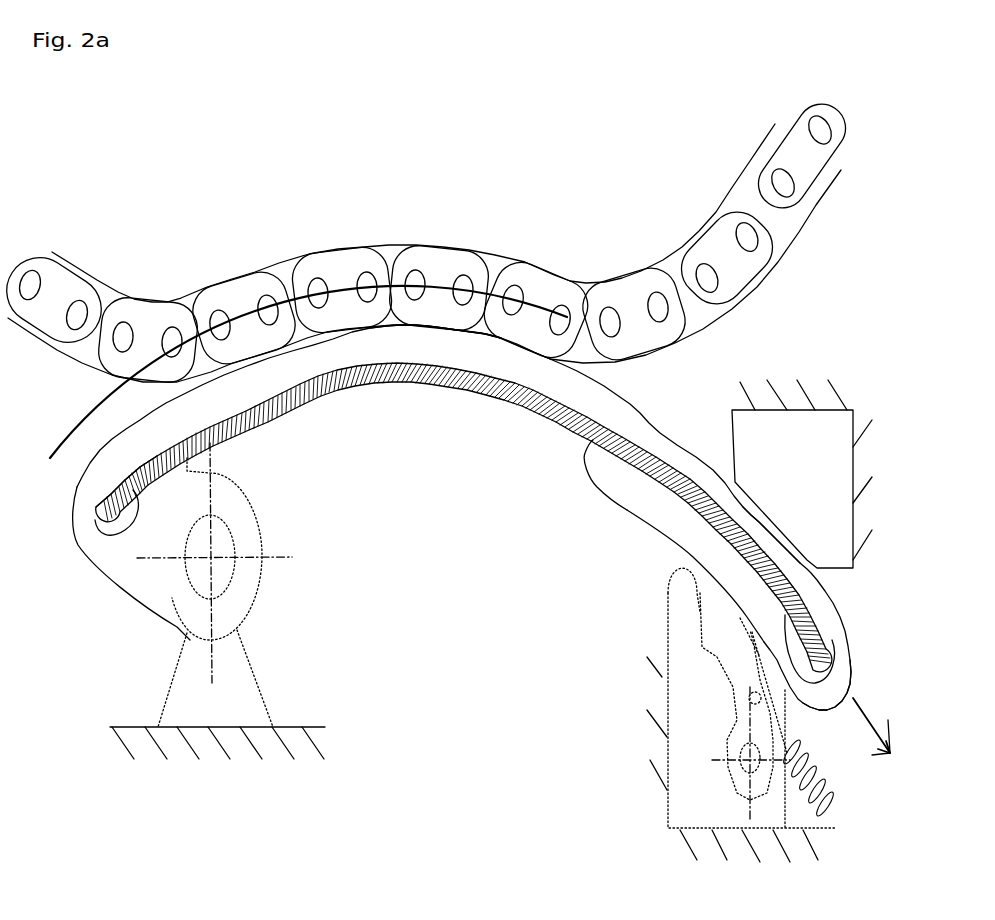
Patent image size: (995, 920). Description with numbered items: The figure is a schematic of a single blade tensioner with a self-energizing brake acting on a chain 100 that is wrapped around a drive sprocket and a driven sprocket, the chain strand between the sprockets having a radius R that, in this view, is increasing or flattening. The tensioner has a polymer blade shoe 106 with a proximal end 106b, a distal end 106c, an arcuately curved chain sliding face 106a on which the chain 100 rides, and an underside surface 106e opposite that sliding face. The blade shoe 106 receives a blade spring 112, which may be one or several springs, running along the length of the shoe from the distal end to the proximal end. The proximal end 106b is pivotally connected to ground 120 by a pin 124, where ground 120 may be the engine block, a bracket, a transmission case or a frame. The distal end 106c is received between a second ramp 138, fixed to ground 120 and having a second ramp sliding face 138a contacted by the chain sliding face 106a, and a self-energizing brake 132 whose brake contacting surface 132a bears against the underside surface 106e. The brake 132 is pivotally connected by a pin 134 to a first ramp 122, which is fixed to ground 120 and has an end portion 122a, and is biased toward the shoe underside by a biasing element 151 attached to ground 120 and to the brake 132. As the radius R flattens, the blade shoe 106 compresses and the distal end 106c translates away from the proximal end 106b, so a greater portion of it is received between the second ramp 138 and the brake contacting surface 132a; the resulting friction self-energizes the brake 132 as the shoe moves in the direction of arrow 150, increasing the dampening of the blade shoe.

The chain 100 is at (248, 283).
The radius of the chain strand R is at (50, 458).
The blade shoe 106 is at (183, 588).
The arcuately curved chain sliding face 106a is at (387, 323).
The proximal end 106b is at (143, 448).
The distal end 106c is at (840, 680).
The underside surface 106e is at (617, 507).
The blade spring 112 is at (297, 387).
The pin 124 is at (218, 573).
The ground 120 is at (225, 752).
The second ramp 138 is at (757, 462).
The second ramp sliding face 138a is at (773, 522).
The first ramp 122 is at (673, 759).
The slider end 122a is at (695, 578).
The self-energizing brake 132 is at (723, 657).
The brake contacting surface 132a is at (745, 600).
The pin 134 is at (747, 768).
The biasing element 151 is at (807, 762).
The arrow 150 is at (863, 723).